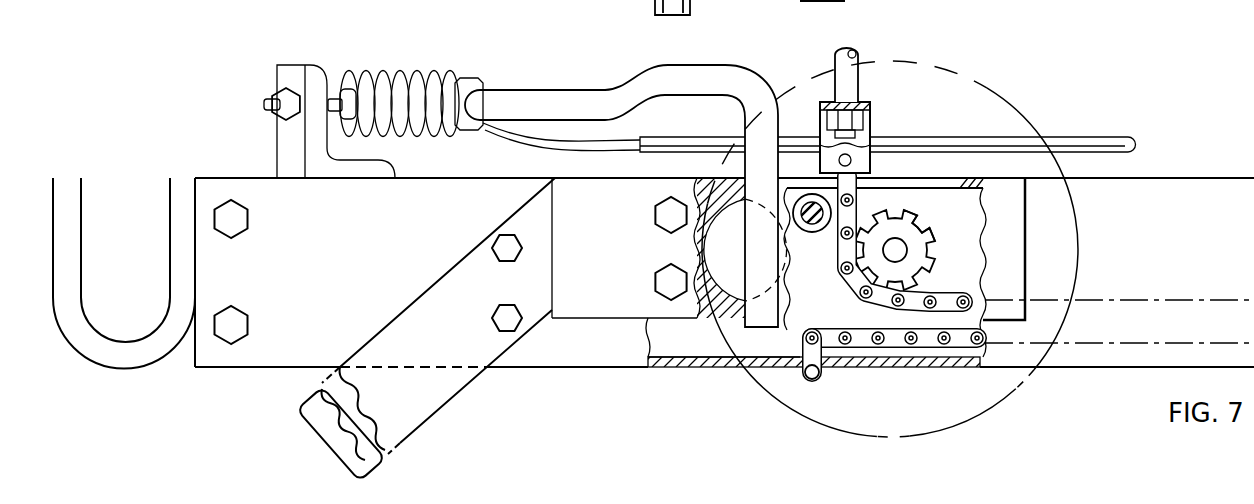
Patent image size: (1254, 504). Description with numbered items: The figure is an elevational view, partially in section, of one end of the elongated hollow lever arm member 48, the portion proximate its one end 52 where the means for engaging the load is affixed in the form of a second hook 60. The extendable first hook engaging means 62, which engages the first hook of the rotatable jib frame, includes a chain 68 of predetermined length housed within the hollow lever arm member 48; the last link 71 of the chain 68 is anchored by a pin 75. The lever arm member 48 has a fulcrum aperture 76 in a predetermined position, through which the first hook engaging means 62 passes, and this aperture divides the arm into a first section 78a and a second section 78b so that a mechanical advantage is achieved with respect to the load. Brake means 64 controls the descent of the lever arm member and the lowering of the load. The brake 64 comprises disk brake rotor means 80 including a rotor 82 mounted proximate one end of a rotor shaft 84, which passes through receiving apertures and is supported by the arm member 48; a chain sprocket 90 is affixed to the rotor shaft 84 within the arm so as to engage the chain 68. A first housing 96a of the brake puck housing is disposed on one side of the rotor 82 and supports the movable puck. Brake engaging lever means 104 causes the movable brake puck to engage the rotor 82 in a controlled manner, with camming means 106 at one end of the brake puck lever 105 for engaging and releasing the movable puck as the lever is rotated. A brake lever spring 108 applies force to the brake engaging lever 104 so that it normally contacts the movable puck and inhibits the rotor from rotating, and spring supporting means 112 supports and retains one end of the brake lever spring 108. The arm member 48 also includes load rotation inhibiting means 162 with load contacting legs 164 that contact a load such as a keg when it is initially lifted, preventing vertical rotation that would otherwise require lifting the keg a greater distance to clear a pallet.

The elongated hollow lever arm member 48 is at (1240, 178).
The one end 52 is at (282, 370).
The second hook 60 is at (82, 292).
The extendable first hook engaging means 62 is at (870, 150).
The brake means 64 is at (698, 65).
The chain 68 is at (852, 330).
The last link 71 is at (762, 383).
The pin 75 is at (822, 375).
The fulcrum aperture 76 is at (913, 183).
The first section 78a is at (522, 369).
The second section 78b is at (1166, 369).
The disk brake rotor means 80 is at (1036, 89).
The rotor 82 is at (868, 66).
The rotor shaft 84 is at (907, 250).
The chain sprocket 90 is at (930, 222).
The first housing 96a is at (775, 0).
The brake engaging lever means 104 is at (546, 62).
The brake puck lever 105 is at (603, 88).
The camming means 106 is at (765, 0).
The brake lever spring 108 is at (412, 68).
The spring supporting means 112 is at (318, 68).
The load rotation inhibiting means 162 is at (462, 383).
The load contacting legs 164 is at (435, 412).